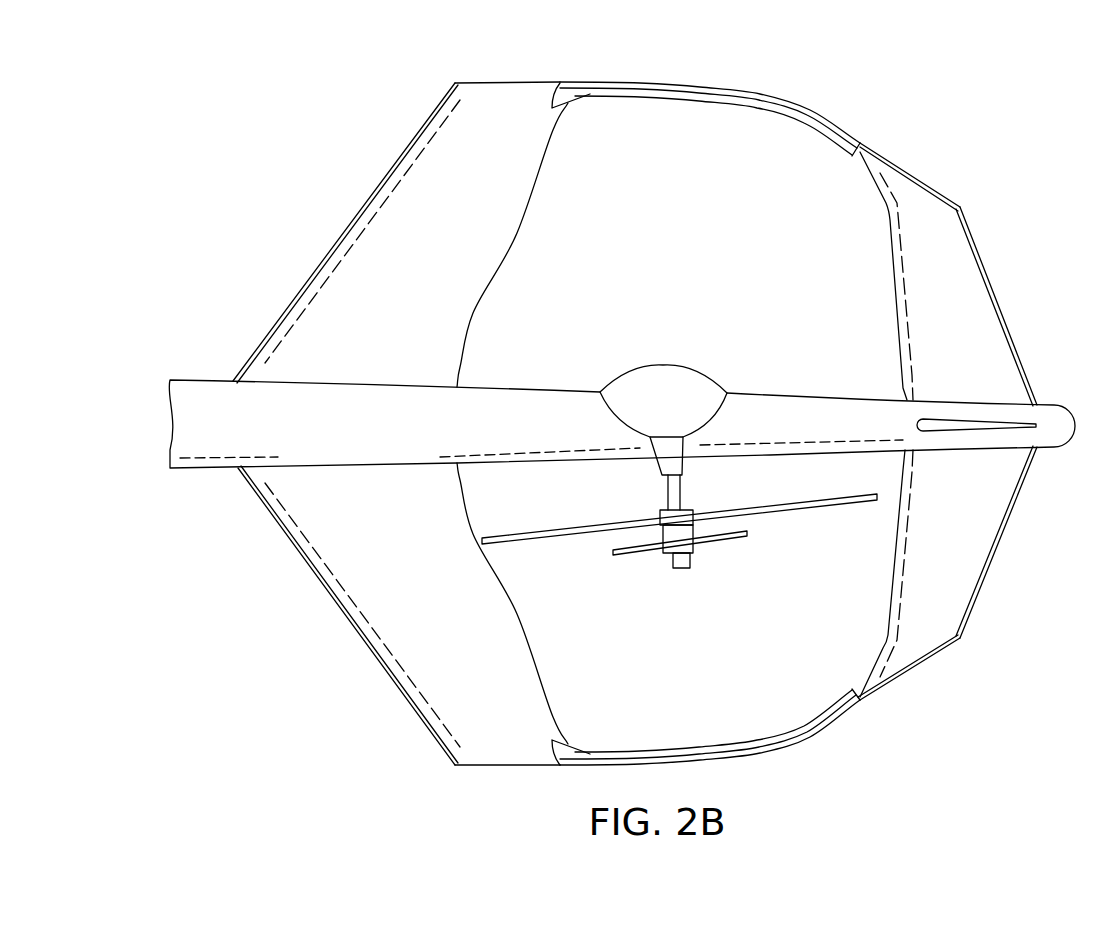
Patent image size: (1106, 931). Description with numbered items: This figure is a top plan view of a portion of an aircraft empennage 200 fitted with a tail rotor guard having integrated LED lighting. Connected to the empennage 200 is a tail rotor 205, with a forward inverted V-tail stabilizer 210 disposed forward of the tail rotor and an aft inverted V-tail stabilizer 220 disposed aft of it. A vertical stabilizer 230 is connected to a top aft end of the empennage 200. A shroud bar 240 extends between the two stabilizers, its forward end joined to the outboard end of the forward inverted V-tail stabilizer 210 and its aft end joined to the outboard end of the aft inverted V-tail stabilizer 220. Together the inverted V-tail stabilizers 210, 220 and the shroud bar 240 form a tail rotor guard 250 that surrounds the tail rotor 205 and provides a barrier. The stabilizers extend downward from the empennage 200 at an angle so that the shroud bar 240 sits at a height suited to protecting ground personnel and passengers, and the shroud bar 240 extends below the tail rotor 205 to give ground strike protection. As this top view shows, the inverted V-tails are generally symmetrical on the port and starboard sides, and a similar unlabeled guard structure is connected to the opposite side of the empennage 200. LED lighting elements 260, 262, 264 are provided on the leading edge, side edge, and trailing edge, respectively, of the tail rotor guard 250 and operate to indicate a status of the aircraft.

The empennage 200 is at (215, 348).
The tail rotor 205 is at (689, 580).
The forward inverted V-tail stabilizer 210 is at (423, 682).
The aft inverted V-tail stabilizer 220 is at (960, 580).
The vertical stabilizer 230 is at (960, 418).
The shroud bar 240 is at (647, 750).
The tail rotor guard 250 is at (263, 598).
The LED lighting element 260 is at (345, 230).
The LED lighting element 262 is at (732, 85).
The LED lighting element 264 is at (1000, 307).